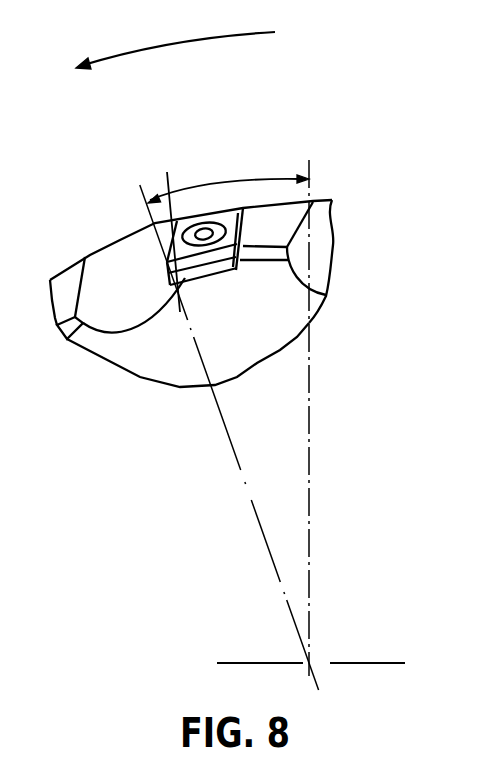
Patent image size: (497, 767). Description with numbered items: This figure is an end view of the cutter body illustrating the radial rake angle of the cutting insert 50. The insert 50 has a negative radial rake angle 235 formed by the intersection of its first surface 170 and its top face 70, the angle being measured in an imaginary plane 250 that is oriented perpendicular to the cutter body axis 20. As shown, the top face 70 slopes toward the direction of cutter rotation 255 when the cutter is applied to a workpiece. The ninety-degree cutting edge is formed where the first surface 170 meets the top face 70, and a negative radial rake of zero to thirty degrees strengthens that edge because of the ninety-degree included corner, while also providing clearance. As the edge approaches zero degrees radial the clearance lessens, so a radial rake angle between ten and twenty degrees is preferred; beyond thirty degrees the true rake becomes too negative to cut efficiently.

The cutter body axis 20 is at (310, 663).
The insert 50 is at (205, 265).
The top face 70 is at (165, 241).
The first surface 170 is at (166, 225).
The negative radial rake angle 235 is at (228, 178).
The imaginary plane 250 is at (230, 452).
The direction of cutter rotation 255 is at (175, 35).